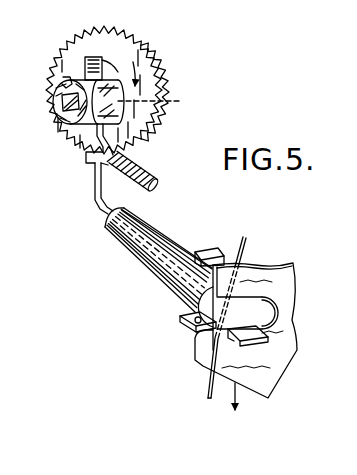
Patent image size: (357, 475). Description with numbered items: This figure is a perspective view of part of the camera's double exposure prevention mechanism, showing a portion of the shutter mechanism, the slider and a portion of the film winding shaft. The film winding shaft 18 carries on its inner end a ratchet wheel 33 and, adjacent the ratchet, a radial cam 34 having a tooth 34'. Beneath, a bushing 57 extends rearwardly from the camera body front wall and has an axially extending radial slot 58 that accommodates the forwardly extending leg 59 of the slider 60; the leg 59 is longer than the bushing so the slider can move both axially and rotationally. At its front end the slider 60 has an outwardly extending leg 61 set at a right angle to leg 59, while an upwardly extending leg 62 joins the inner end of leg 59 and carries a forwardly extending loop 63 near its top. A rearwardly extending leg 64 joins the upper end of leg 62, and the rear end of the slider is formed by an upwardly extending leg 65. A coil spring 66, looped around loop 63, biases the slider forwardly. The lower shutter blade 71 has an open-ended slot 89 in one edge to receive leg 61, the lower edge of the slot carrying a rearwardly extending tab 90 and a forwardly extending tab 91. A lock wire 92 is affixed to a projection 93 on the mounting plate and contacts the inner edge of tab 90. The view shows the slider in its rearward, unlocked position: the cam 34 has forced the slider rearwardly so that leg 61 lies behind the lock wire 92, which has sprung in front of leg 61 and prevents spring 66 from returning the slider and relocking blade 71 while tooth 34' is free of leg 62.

The film winding shaft 18 is at (65, 105).
The ratchet wheel 33 is at (143, 68).
The radial cam 34 is at (73, 47).
The tooth 34' is at (120, 36).
The bushing 57 is at (140, 263).
The radial slot 58 is at (157, 240).
The forwardly extending leg 59 is at (154, 288).
The slider 60 is at (92, 206).
The outwardly extending leg 61 is at (196, 340).
The upwardly extending leg 62 is at (96, 182).
The forwardly extending loop 63 is at (86, 154).
The rearwardly extending leg 64 is at (160, 104).
The upwardly extending leg 65 is at (63, 82).
The coil spring 66 is at (155, 173).
The lower shutter blade 71 is at (268, 388).
The open-ended slot 89 is at (262, 316).
The rearwardly extending tab 90 is at (184, 328).
The forwardly extending tab 91 is at (288, 345).
The lock wire 92 is at (207, 391).
The projection 93 is at (208, 251).